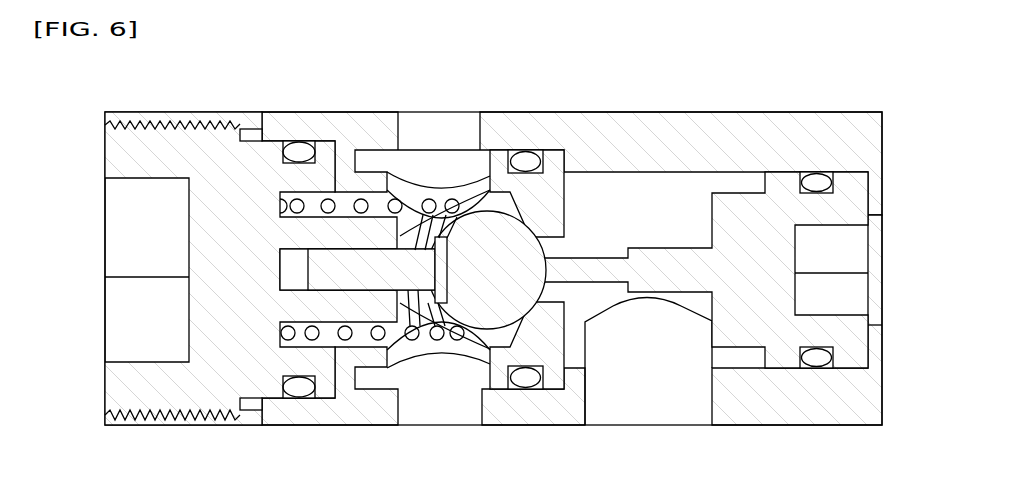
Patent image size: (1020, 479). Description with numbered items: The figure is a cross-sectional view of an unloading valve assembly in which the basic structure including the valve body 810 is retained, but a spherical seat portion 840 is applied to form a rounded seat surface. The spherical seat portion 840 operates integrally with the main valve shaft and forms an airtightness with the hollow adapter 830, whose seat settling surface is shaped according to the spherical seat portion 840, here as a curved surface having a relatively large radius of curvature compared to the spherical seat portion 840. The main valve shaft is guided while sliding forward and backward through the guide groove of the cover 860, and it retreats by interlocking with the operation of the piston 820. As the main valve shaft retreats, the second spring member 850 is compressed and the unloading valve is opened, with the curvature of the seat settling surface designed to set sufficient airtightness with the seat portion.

The valve body 810 is at (680, 138).
The piston 820 is at (852, 196).
The hollow adapter 830 is at (553, 386).
The spherical seat portion 840 is at (476, 222).
The second spring member 850 is at (413, 336).
The cover 860 is at (121, 149).